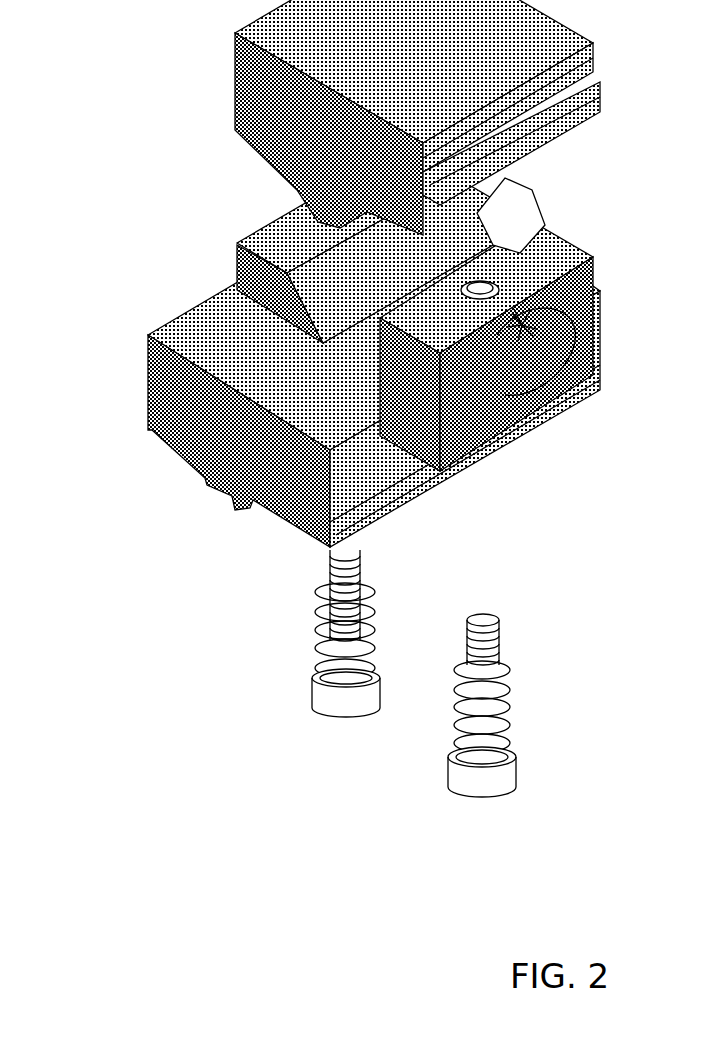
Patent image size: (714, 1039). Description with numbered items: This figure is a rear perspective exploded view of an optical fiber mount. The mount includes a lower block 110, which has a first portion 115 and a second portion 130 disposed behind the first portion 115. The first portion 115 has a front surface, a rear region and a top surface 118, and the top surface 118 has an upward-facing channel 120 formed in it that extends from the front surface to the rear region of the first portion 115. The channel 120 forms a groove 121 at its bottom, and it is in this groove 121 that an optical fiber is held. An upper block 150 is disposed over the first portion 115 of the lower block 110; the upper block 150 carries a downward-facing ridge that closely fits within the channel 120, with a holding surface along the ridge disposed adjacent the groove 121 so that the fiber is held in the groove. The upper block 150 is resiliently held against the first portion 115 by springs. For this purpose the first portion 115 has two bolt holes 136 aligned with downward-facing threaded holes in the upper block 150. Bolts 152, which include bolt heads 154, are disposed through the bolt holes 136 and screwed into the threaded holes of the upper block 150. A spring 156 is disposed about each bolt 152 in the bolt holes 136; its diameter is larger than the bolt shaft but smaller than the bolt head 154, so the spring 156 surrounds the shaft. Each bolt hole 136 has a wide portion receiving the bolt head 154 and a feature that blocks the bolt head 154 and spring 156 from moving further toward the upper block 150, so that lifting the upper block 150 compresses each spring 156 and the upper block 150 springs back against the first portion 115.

The lower block 110 is at (193, 315).
The first portion 115 is at (542, 481).
The top surface 118 is at (543, 263).
The upward-facing channel 120 is at (461, 308).
The groove 121 is at (366, 310).
The second portion 130 is at (421, 557).
The bolt holes 136 is at (480, 287).
The upper block 150 is at (237, 85).
The bolts 152 is at (493, 645).
The bolt heads 154 is at (315, 704).
The spring 156 is at (323, 668).